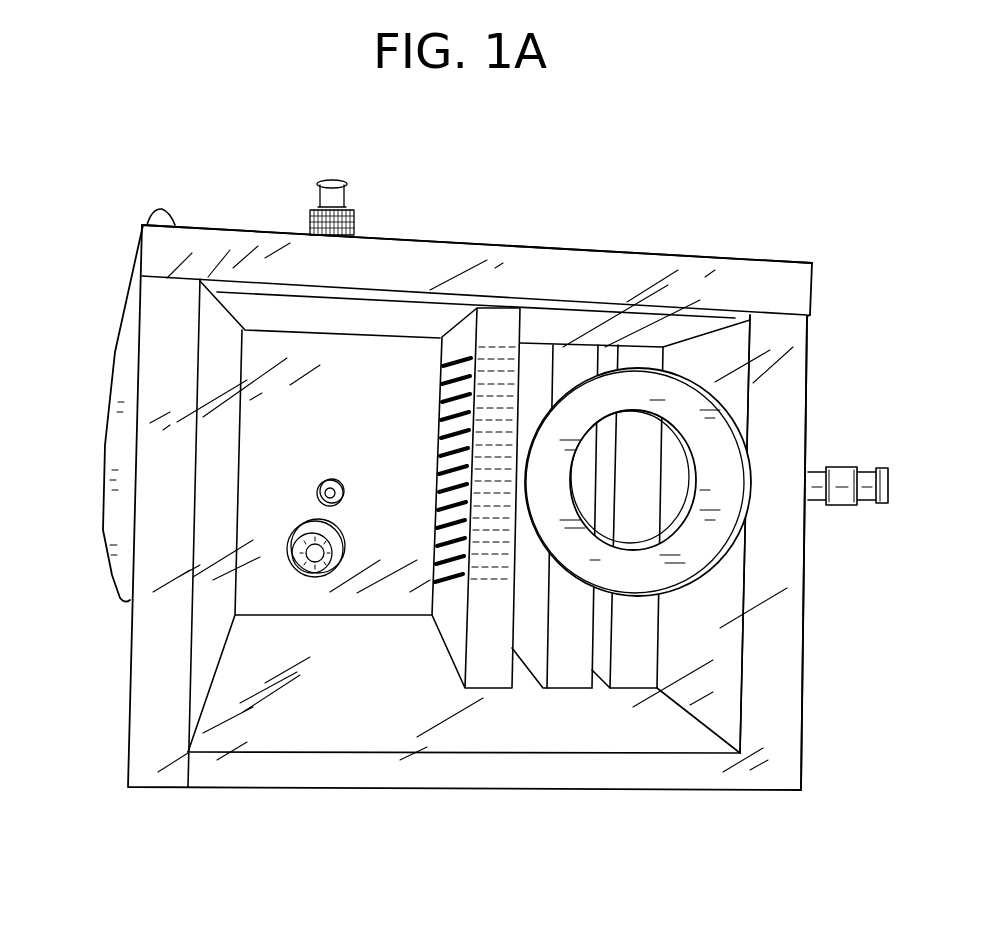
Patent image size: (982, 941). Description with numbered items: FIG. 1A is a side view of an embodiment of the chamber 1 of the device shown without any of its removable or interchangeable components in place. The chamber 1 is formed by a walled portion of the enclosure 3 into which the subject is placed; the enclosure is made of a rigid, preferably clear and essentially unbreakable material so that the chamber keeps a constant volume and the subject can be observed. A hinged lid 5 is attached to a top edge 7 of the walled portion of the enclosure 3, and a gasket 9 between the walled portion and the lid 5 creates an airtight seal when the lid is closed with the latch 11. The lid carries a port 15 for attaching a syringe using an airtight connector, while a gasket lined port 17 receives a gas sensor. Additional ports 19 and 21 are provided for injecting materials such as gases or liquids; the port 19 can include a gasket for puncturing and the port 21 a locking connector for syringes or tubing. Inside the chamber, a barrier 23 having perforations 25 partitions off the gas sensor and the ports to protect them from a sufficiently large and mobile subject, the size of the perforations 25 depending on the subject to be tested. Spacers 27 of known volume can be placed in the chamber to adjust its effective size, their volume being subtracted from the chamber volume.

The chamber 1 is at (108, 627).
The enclosure 3 is at (140, 722).
The hinged lid 5 is at (592, 262).
The top edge 7 is at (783, 312).
The gasket 9 is at (663, 313).
The latch 11 is at (128, 333).
The port 15 is at (348, 200).
The gasket lined port 17 is at (705, 535).
The port 19 is at (295, 535).
The port 21 is at (845, 466).
The barrier 23 is at (458, 646).
The perforations 25 is at (438, 470).
The spacers 27 is at (628, 670).